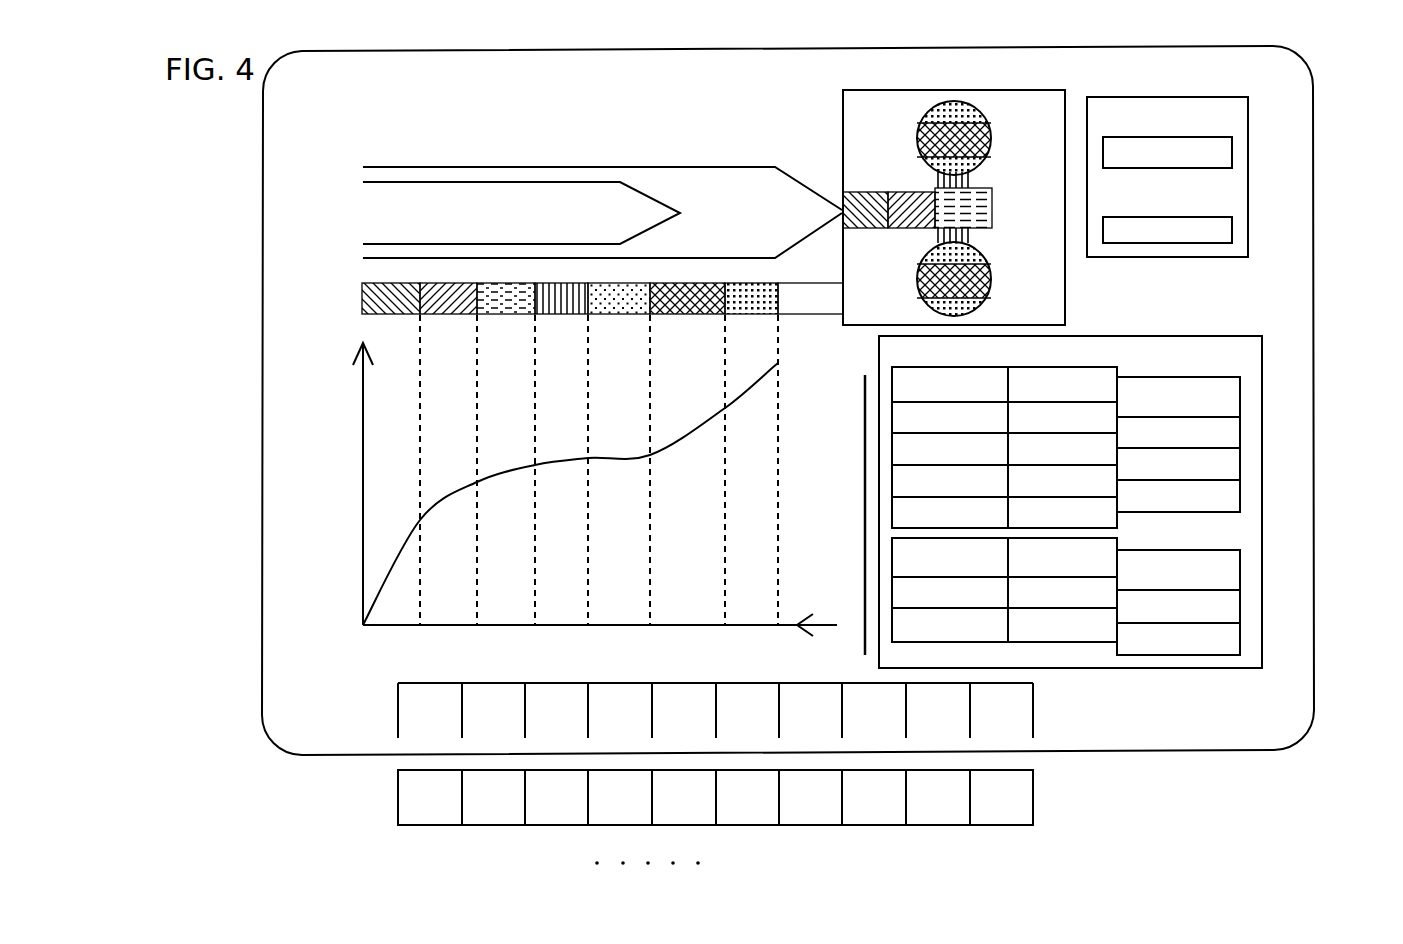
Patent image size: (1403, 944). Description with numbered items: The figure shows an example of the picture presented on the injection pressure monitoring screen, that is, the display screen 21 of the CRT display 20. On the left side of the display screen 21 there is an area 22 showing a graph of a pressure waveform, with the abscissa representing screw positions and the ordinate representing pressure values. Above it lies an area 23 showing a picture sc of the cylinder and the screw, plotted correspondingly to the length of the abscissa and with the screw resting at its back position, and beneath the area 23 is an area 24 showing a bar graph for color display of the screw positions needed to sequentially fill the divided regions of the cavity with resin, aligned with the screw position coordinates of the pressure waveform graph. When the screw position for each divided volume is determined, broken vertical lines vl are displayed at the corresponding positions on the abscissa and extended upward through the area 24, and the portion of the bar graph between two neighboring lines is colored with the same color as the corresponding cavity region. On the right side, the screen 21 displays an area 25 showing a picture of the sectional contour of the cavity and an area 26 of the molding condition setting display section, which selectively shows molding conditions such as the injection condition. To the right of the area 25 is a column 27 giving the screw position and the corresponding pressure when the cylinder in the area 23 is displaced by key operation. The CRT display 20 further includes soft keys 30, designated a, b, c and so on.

The CRT display 20 is at (1355, 819).
The display screen 21 is at (1313, 352).
The area showing a graph of a pressure waveform 22 is at (559, 491).
The area showing a picture of the cylinder and screw 23 is at (602, 176).
The area showing a bar graph 24 is at (360, 297).
The area showing a picture of the cavity 25 is at (860, 112).
The area of molding condition setting display section 26 is at (1270, 510).
The column representing a screw position and corresponding pressure 27 is at (1248, 166).
The soft keys 30 is at (747, 781).
The picture of the cylinder and the screw SC is at (647, 193).
The vertical lines VI is at (585, 385).
The soft key a is at (438, 813).
The soft key b is at (502, 813).
The soft key c is at (555, 815).